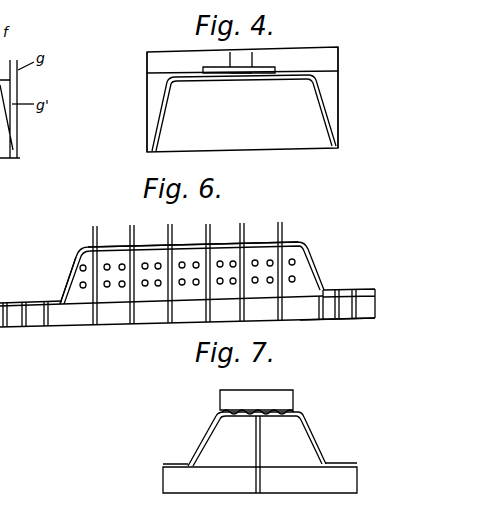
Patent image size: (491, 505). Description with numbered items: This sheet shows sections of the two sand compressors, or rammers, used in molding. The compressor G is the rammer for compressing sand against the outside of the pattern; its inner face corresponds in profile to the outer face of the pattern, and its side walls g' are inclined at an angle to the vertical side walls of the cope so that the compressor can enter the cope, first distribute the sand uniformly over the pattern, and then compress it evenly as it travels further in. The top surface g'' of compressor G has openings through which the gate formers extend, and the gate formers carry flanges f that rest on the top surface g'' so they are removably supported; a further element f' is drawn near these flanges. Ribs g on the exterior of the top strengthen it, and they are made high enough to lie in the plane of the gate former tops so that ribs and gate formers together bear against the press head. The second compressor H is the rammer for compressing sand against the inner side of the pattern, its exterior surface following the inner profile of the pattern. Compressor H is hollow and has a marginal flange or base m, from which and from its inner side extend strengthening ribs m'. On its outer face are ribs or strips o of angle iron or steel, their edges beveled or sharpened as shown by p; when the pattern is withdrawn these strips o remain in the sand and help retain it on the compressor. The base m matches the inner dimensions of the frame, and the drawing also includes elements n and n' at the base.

In FIG. 4, the ribs g is at (242, 83).
In FIG. 4, the side walls g' is at (235, 99).
In FIG. 4, the top surface g'' is at (257, 57).
In FIG. 4, the flanges f is at (232, 88).
In FIG. 4, the plate opening f' is at (249, 91).
In FIG. 4, the compressor G is at (244, 113).
In FIG. 6, the ribs or strips o is at (122, 246).
In FIG. 6, the beveled edges p is at (212, 238).
In FIG. 7, the beveled edges p is at (292, 397).
In FIG. 6, the marginal flange m is at (187, 292).
In FIG. 7, the marginal flange m is at (259, 464).
In FIG. 6, the strengthening ribs m' is at (76, 318).
In FIG. 6, the second compressor H is at (160, 292).
In FIG. 7, the second compressor H is at (257, 439).
In FIG. 7, the central post n is at (262, 429).
In FIG. 6, the bottom plate n' is at (337, 337).